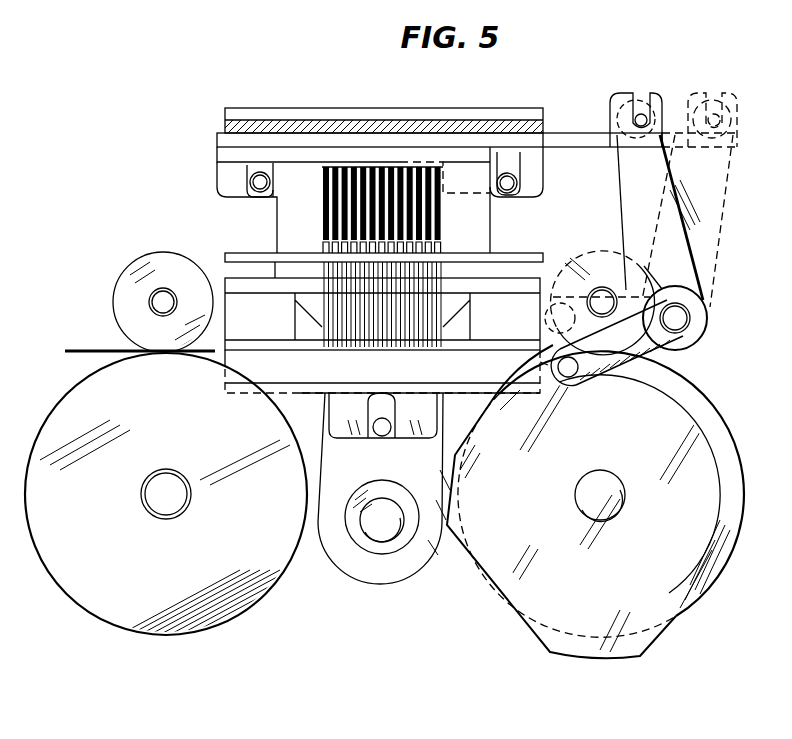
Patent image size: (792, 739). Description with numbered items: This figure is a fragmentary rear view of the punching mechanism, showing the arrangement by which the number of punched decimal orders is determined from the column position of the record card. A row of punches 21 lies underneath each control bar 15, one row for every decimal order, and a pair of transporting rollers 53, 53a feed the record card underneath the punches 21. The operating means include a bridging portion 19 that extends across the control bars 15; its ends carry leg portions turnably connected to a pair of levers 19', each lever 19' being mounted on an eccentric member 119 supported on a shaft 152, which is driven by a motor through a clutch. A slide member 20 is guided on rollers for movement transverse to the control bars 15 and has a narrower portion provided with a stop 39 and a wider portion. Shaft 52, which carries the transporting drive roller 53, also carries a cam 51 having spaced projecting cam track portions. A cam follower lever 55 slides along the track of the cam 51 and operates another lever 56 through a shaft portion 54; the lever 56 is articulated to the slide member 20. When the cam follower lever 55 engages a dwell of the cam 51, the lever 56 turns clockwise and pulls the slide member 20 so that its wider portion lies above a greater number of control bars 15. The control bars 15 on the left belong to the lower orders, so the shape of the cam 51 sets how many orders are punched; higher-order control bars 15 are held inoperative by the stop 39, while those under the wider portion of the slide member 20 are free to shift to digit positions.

The control bar 15 is at (322, 214).
The bridging portion 19 is at (386, 106).
The lever 19' is at (382, 502).
The slide member 20 is at (218, 152).
The punch 21 is at (447, 264).
The stop 39 is at (440, 162).
The cam 51 is at (648, 645).
The shaft 52 is at (588, 486).
The transporting roller 53 is at (735, 476).
The transporting roller 53a is at (596, 252).
The shaft portion 54 is at (690, 318).
The cam follower lever 55 is at (680, 352).
The lever 56 is at (668, 196).
The eccentric member 119 is at (372, 488).
The shaft 152 is at (395, 545).